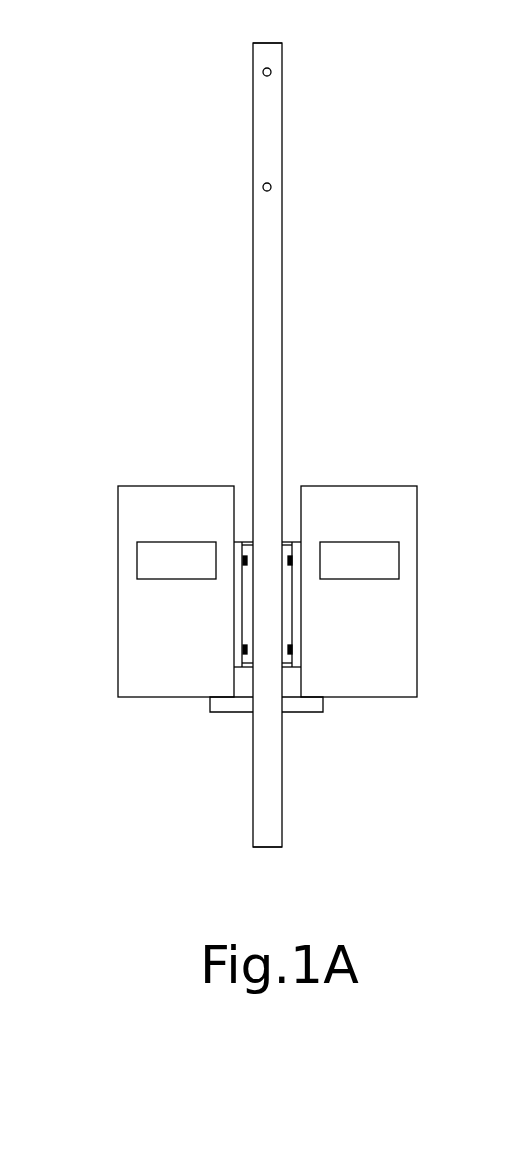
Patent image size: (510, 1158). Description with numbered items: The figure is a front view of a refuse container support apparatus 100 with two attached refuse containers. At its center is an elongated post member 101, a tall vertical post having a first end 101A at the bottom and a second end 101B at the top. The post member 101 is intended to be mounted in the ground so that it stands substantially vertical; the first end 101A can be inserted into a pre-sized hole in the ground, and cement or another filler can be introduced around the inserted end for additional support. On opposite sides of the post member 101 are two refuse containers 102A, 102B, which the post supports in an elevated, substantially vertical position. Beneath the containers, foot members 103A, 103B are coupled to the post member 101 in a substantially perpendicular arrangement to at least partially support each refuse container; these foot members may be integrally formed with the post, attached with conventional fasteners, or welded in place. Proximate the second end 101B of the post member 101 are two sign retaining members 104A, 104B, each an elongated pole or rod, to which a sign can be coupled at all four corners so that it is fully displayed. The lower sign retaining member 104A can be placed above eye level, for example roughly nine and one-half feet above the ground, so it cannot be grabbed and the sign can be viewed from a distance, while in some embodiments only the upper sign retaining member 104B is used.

The refuse container support apparatus 100 is at (112, 80).
The elongated post member 101 is at (265, 310).
The first end 101A is at (265, 818).
The second end 101B is at (282, 53).
The refuse container 102A is at (170, 638).
The refuse container 102B is at (358, 638).
The foot member 103A is at (219, 707).
The foot member 103B is at (318, 707).
The sign retaining member 104A is at (263, 187).
The sign retaining member 104B is at (263, 72).